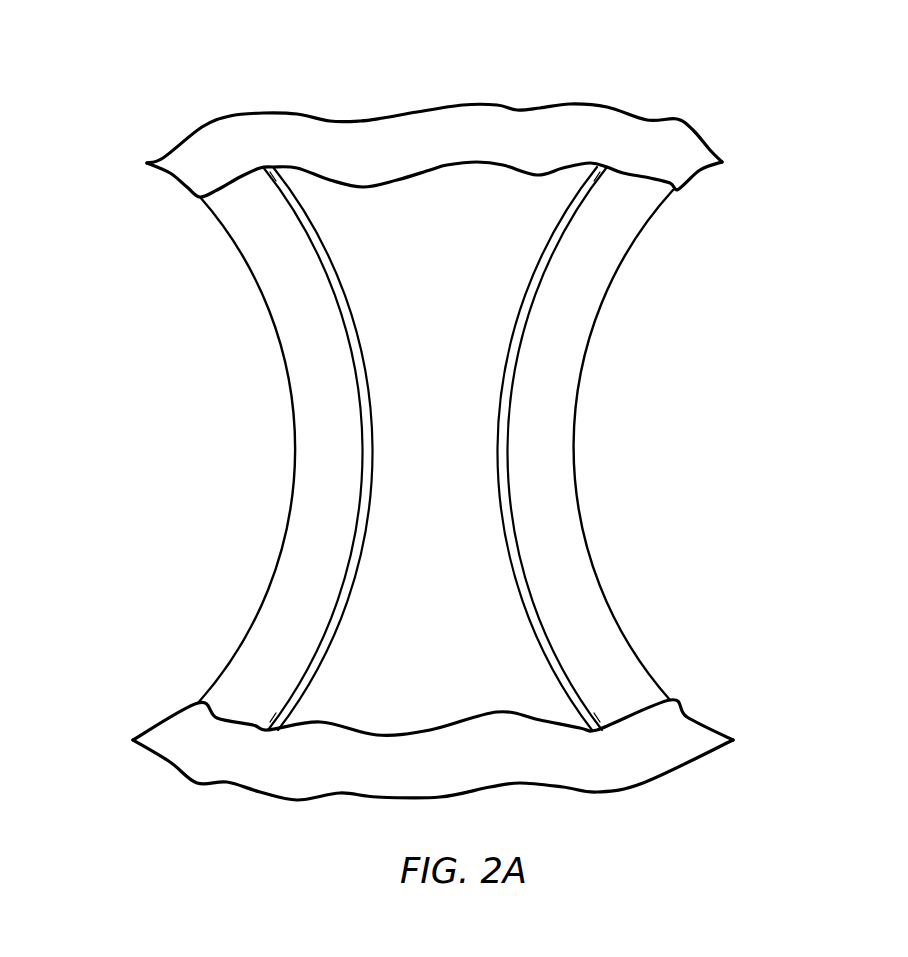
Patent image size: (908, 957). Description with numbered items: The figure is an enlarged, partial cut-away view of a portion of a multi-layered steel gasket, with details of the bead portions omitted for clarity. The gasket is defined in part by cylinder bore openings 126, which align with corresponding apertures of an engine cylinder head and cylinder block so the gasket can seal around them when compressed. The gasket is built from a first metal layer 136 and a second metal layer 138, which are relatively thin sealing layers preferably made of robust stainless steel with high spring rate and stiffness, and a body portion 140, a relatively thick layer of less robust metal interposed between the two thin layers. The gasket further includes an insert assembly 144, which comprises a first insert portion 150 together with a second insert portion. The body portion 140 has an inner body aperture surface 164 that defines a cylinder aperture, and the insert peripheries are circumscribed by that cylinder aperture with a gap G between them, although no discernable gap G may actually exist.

The cylinder bore opening 126 is at (217, 478).
The first metal layer 136 is at (677, 168).
The second metal layer 138 is at (327, 647).
The body portion 140 is at (447, 207).
The insert assembly 144 is at (249, 271).
The first insert portion 150 is at (307, 315).
The inner body aperture surface 164 is at (364, 375).
The gap G is at (263, 168).